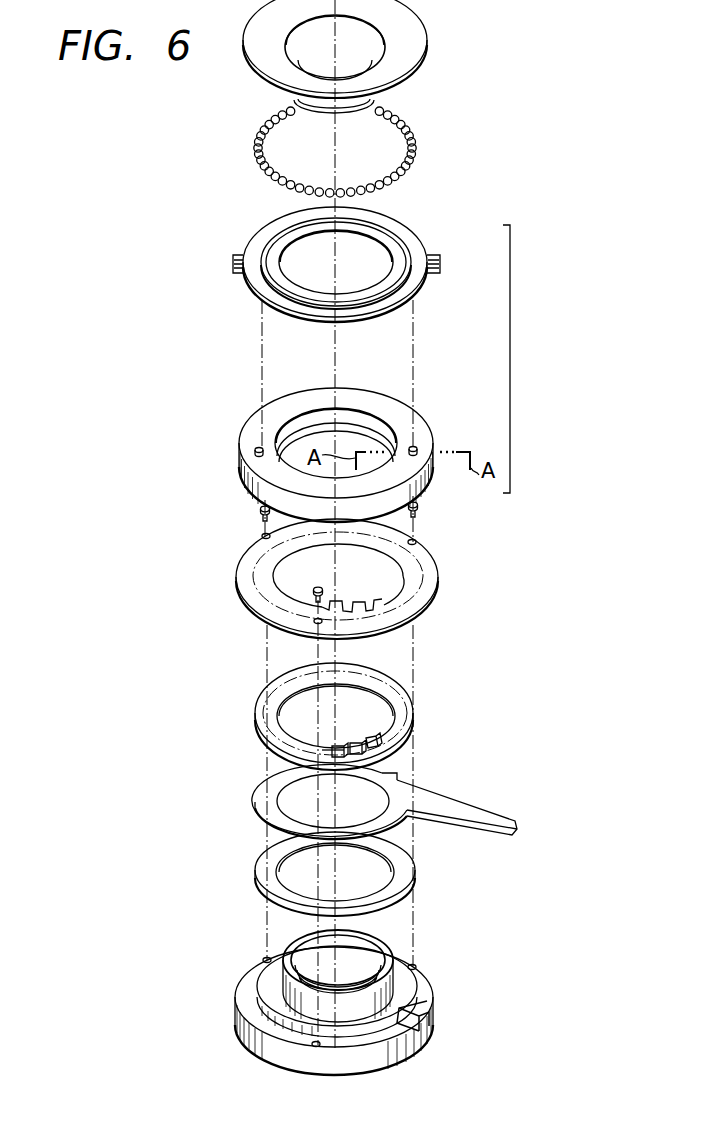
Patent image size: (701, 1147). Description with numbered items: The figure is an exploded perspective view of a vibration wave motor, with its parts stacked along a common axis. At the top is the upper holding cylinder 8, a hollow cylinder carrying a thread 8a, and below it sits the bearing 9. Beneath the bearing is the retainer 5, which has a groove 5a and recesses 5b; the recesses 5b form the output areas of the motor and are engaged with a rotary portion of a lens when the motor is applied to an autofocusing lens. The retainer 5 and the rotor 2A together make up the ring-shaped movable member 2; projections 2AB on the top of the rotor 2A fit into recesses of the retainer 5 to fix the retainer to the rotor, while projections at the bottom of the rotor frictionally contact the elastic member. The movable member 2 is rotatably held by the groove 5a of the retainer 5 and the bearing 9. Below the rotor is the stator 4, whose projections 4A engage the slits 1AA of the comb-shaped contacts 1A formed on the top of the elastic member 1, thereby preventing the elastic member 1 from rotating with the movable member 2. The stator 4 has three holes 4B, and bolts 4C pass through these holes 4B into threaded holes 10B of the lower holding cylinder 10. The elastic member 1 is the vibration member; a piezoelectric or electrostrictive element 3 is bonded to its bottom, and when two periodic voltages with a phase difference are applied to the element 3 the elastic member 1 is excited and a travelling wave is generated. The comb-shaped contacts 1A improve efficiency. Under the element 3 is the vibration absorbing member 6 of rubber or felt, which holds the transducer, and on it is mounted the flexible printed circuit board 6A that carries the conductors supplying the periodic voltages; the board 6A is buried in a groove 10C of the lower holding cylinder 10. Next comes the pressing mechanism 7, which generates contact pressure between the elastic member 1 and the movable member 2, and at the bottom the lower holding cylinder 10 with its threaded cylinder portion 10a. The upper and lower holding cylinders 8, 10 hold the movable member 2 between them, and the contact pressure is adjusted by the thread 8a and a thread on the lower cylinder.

The upper holding cylinder 8 is at (420, 41).
The thread 8a is at (385, 100).
The bearing 9 is at (413, 131).
The retainer 5 is at (420, 250).
The groove 5a is at (404, 238).
The recesses 5b is at (442, 259).
The movable member 2 is at (512, 347).
The rotor 2A is at (424, 479).
The projections 2AB is at (418, 446).
The stator 4 is at (438, 578).
The projections 4A is at (343, 603).
The holes 4B is at (263, 538).
The bolts 4C is at (262, 509).
The elastic member 1 is at (410, 726).
The comb-shaped contacts 1A is at (335, 746).
The slits 1AA is at (346, 744).
The piezoelectric or electrostrictive element 3 is at (385, 750).
The vibration absorbing member 6 is at (262, 805).
The flexible printed circuit board 6A is at (480, 812).
The pressing mechanism 7 is at (412, 894).
The lower holding cylinder 10 is at (433, 994).
The threaded cylinder of base 10a is at (358, 958).
The threaded holes 10B is at (265, 958).
The groove 10C is at (429, 1021).